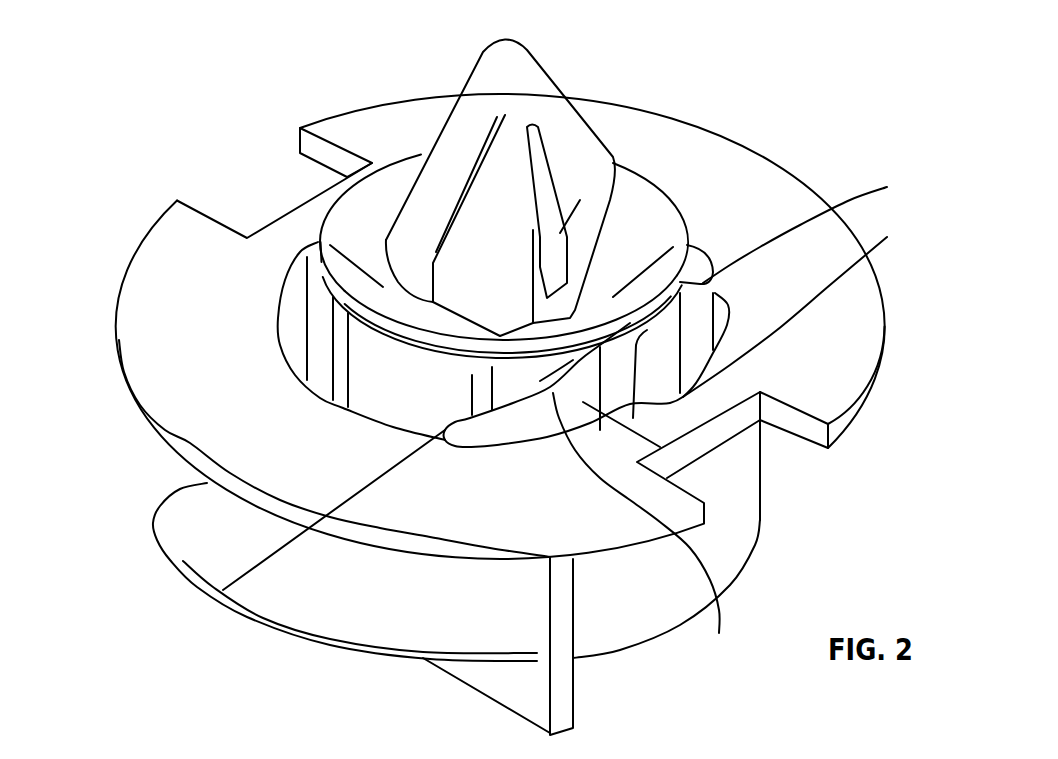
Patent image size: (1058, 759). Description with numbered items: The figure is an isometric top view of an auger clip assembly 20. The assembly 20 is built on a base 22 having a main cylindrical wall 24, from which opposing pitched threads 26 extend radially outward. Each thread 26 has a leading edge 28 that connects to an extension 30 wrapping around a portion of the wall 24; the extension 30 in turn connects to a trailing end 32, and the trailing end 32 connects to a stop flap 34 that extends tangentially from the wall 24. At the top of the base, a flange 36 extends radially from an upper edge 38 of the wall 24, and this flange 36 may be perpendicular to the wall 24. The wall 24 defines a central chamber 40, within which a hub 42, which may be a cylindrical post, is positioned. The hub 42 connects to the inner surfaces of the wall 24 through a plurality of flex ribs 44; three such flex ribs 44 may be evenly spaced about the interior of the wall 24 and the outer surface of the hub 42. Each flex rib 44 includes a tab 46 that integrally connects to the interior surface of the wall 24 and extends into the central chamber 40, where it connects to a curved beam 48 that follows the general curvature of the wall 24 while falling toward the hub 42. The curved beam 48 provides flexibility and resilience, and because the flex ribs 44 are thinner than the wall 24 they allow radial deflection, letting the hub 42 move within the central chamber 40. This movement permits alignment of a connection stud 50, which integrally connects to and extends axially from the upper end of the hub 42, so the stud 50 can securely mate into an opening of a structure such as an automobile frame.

The auger clip assembly 20 is at (240, 72).
The base 22 is at (750, 566).
The main cylindrical wall 24 is at (643, 617).
The pitched threads 26 is at (313, 617).
The leading edge 28 is at (157, 524).
The extension 30 is at (247, 597).
The trailing end 32 is at (487, 633).
The stop flap 34 is at (562, 713).
The flange 36 is at (793, 177).
The upper edge 38 is at (260, 260).
The central chamber 40 is at (799, 308).
The hub 42 is at (540, 380).
The flex ribs 44 is at (792, 530).
The tab 46 is at (216, 592).
The curved beam 48 is at (644, 528).
The connection stud 50 is at (452, 90).